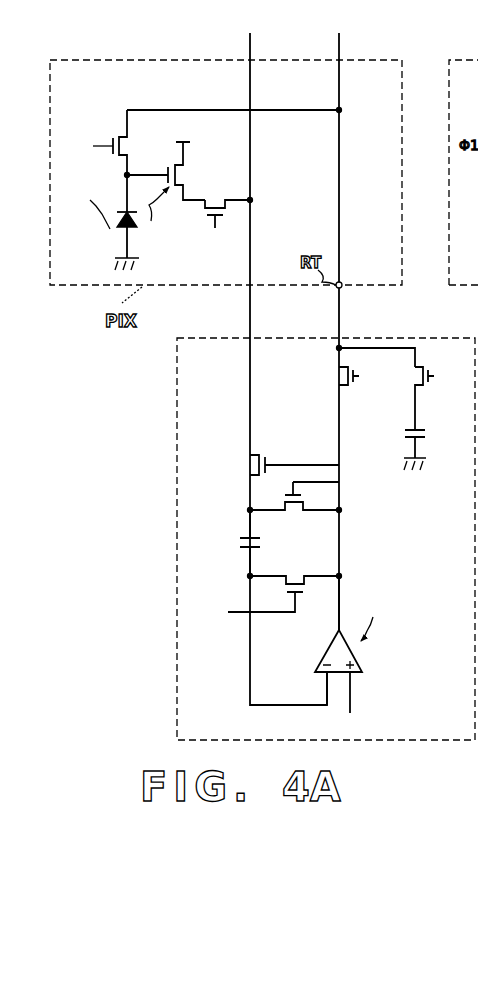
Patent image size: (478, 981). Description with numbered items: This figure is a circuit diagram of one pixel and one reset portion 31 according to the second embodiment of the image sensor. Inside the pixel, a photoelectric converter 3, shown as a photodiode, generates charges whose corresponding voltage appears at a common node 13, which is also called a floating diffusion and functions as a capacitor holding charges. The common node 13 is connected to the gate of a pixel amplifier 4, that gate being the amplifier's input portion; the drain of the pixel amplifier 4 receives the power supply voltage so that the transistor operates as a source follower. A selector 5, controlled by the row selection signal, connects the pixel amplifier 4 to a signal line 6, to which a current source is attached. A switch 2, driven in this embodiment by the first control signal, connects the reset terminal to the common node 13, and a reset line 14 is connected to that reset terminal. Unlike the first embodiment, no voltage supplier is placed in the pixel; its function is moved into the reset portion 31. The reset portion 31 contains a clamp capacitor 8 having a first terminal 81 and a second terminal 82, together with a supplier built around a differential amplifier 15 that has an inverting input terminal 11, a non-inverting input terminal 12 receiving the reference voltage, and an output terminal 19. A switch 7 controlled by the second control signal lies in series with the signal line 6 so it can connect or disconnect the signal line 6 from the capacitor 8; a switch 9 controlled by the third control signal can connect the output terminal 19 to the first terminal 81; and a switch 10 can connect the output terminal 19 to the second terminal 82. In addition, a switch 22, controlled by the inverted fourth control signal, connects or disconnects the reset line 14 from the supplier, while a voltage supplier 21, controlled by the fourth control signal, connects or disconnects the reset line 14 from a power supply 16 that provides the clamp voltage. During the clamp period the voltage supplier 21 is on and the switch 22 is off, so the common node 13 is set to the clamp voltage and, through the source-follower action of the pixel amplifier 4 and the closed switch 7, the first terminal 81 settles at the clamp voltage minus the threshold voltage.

The switch 2 is at (125, 135).
The photoelectric converter 3 is at (109, 223).
The pixel amplifier 4 is at (172, 166).
The selector 5 is at (216, 206).
The signal line 6 is at (250, 319).
The switch 7 is at (245, 464).
The capacitor 8 is at (237, 543).
The switch 9 is at (296, 512).
The switch 10 is at (294, 576).
The inverting input terminal 11 is at (319, 684).
The non-inverting input terminal 12 is at (358, 680).
The common node 13 is at (127, 175).
The reset line 14 is at (339, 318).
The differential amplifier 15 is at (324, 658).
The power supply 16 is at (426, 438).
The output terminal 19 is at (336, 628).
The voltage supplier 21 is at (427, 392).
The switch 22 is at (336, 377).
The reset portion 31 is at (177, 584).
The first terminal 81 is at (245, 532).
The second terminal 82 is at (244, 557).